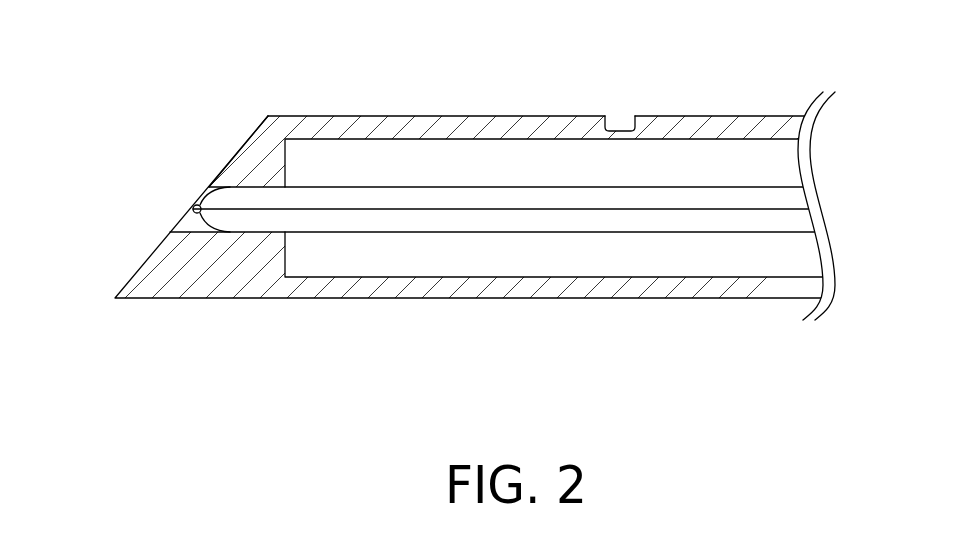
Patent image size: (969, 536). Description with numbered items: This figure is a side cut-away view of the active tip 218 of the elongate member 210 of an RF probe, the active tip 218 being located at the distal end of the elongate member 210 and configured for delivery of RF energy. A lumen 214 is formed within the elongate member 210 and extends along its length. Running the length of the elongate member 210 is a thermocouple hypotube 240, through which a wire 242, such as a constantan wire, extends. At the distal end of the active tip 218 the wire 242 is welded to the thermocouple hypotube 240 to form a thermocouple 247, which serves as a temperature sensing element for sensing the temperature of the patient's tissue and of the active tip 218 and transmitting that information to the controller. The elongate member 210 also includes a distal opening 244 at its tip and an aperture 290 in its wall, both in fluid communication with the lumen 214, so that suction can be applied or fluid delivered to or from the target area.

The elongate member 210 is at (728, 95).
The active tip 218 is at (198, 132).
The lumen 214 is at (316, 167).
The wire 242 is at (392, 187).
The thermocouple hypotube 240 is at (498, 187).
The distal opening 244 is at (168, 220).
The thermocouple 247 is at (192, 208).
The aperture 290 is at (620, 123).